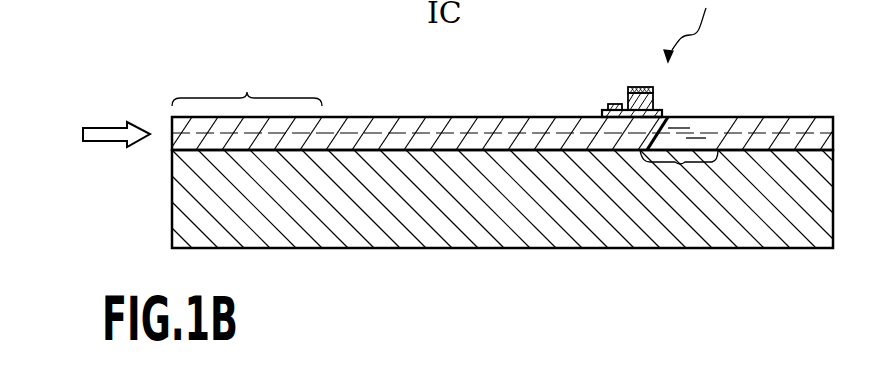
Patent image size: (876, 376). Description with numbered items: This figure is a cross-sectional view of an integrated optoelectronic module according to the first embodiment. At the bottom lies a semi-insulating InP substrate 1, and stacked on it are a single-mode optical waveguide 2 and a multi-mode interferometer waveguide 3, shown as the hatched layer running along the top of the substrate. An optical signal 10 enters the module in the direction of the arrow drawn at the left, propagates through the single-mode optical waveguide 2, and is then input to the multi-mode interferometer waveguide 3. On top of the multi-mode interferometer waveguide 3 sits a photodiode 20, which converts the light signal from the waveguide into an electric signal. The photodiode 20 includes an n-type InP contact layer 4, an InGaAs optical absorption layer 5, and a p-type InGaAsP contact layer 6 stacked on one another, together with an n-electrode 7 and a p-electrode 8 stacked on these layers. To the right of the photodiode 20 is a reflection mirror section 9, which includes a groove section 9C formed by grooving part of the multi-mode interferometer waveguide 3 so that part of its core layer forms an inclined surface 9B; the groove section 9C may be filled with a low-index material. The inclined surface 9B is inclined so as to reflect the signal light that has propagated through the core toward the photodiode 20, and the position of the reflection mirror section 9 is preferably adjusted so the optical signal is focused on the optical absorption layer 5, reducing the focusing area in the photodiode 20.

The semi-insulating InP substrate 1 is at (277, 249).
The single-mode optical waveguide 2 is at (247, 87).
The multi-mode interferometer waveguide 3 is at (392, 120).
The n-type InP contact layer 4 is at (603, 109).
The InGaAs optical absorption layer 5 is at (662, 112).
The p-type InGaAsP contact layer 6 is at (656, 100).
The n-electrode 7 is at (613, 104).
The p-electrode 8 is at (640, 87).
The reflection mirror section 9 is at (680, 163).
The inclined surface 9B is at (668, 128).
The groove section 9C is at (686, 138).
The optical signal 10 is at (112, 124).
The photodiode 20 is at (692, 31).